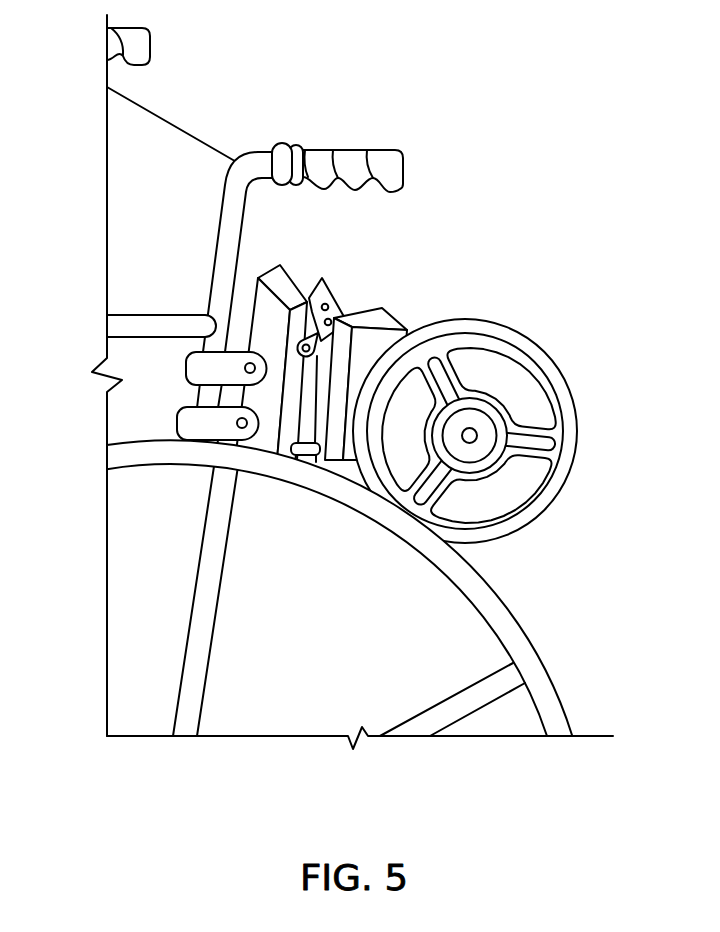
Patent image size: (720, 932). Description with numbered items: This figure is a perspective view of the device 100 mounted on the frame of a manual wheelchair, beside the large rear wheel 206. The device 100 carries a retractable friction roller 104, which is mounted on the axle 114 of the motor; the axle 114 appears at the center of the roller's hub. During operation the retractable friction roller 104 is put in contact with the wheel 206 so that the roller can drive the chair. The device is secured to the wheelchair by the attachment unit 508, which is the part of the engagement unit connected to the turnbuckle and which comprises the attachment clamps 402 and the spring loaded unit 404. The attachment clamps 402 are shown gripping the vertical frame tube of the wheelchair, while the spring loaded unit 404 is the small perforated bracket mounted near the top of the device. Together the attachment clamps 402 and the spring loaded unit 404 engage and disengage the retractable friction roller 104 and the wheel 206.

The device 100 is at (405, 310).
The retractable friction roller 104 is at (516, 431).
The axle 114 is at (471, 438).
The wheel 206 is at (533, 668).
The attachment clamps 402 is at (198, 368).
The spring loaded unit 404 is at (324, 296).
The attachment unit 508 is at (167, 472).